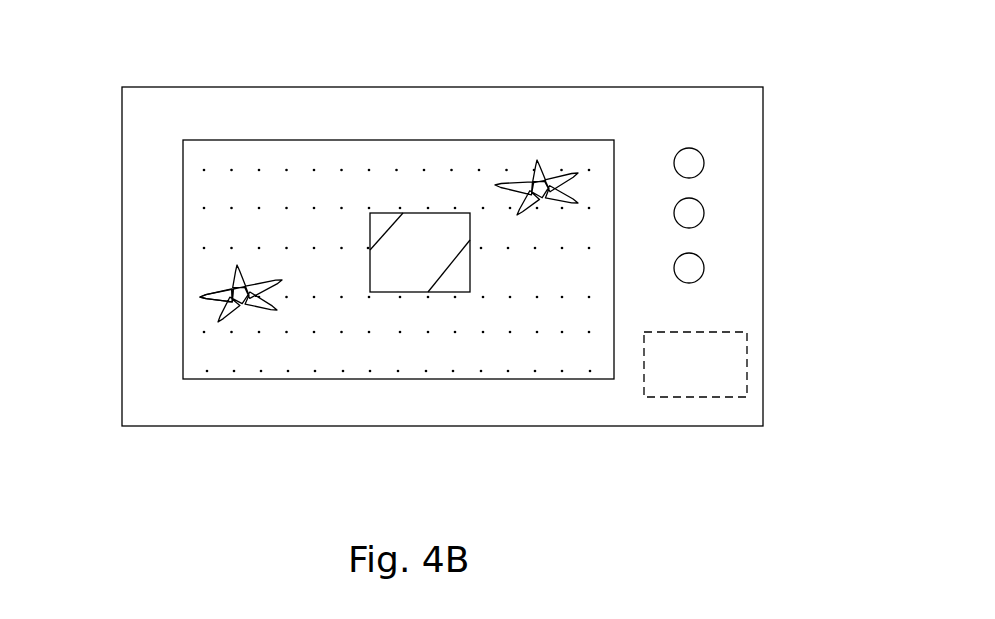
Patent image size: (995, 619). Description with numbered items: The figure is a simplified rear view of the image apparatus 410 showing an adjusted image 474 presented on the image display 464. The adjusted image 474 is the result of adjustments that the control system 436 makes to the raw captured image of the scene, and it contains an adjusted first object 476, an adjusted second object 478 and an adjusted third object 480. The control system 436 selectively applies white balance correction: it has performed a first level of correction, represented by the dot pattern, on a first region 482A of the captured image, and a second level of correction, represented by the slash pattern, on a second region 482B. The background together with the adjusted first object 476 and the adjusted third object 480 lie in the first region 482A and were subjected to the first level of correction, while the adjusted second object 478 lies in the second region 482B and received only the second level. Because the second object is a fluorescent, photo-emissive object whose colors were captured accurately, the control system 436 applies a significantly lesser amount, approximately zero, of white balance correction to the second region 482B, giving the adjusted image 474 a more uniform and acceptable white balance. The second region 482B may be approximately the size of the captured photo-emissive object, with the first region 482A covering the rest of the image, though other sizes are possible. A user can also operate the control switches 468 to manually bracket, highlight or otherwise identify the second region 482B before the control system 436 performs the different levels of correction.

The image apparatus 410 is at (150, 119).
The image display 464 is at (240, 138).
The first region 482A is at (343, 160).
The second region 482B is at (428, 198).
The adjusted third object 480 is at (537, 160).
The adjusted first object 476 is at (217, 322).
The adjusted image 474 is at (190, 284).
The adjusted second object 478 is at (402, 287).
The control switches 468 is at (695, 163).
The control system 436 is at (715, 355).